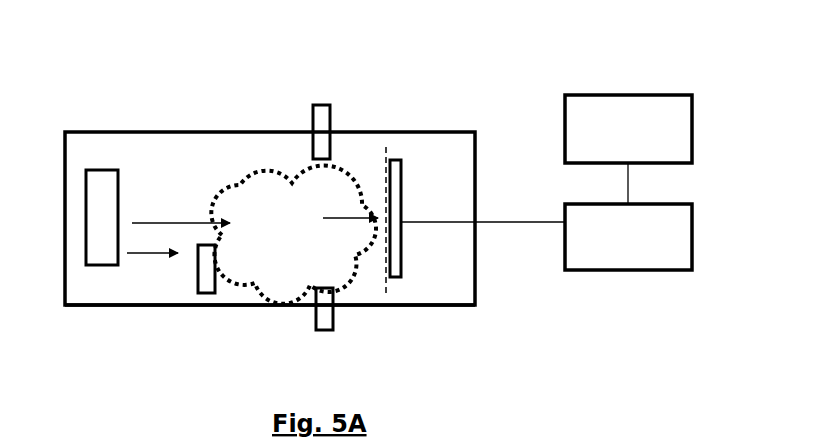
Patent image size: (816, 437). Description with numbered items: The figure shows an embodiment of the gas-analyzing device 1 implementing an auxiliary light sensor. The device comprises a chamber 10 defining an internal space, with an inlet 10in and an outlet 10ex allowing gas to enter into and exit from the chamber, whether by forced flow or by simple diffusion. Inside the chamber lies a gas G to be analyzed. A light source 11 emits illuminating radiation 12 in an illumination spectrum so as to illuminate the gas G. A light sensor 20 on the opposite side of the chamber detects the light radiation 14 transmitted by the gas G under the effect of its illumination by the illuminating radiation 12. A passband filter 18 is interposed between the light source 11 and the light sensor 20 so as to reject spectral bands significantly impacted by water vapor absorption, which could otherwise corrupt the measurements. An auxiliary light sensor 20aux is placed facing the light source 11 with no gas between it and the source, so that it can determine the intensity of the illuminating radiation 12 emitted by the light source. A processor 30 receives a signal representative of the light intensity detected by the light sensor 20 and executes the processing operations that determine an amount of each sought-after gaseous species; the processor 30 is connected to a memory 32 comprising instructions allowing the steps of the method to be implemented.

The gas-analyzing device 1 is at (119, 77).
The chamber 10 is at (265, 311).
The inlet 10in is at (318, 124).
The outlet 10ex is at (322, 320).
The light source 11 is at (103, 272).
The illuminating radiation 12 is at (206, 210).
The light radiation 14 is at (363, 237).
The passband filter 18 is at (393, 148).
The light sensor 20 is at (412, 234).
The auxiliary light sensor 20aux is at (204, 298).
The processor 30 is at (616, 239).
The memory 32 is at (620, 126).
The gas G is at (311, 204).